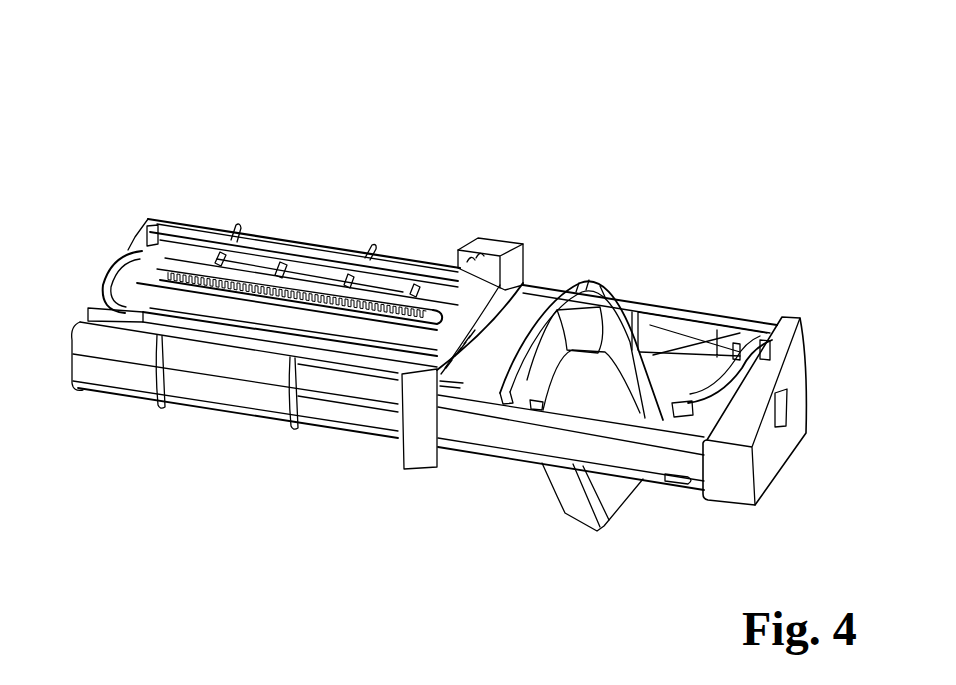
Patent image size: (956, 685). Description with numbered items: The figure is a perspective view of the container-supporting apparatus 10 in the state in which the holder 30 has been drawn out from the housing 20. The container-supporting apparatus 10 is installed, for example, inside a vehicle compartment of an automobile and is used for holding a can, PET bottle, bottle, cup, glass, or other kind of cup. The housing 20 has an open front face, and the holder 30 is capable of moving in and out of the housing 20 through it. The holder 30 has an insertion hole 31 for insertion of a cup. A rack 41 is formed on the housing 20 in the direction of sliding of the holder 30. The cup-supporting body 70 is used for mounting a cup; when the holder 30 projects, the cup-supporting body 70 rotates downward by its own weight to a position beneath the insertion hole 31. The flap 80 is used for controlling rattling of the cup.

The container-supporting apparatus 10 is at (439, 319).
The housing 20 is at (208, 395).
The holder 30 is at (773, 452).
The insertion hole 31 is at (660, 370).
The rack 41 is at (280, 268).
The cup-supporting body 70 is at (585, 521).
The flap 80 is at (733, 360).